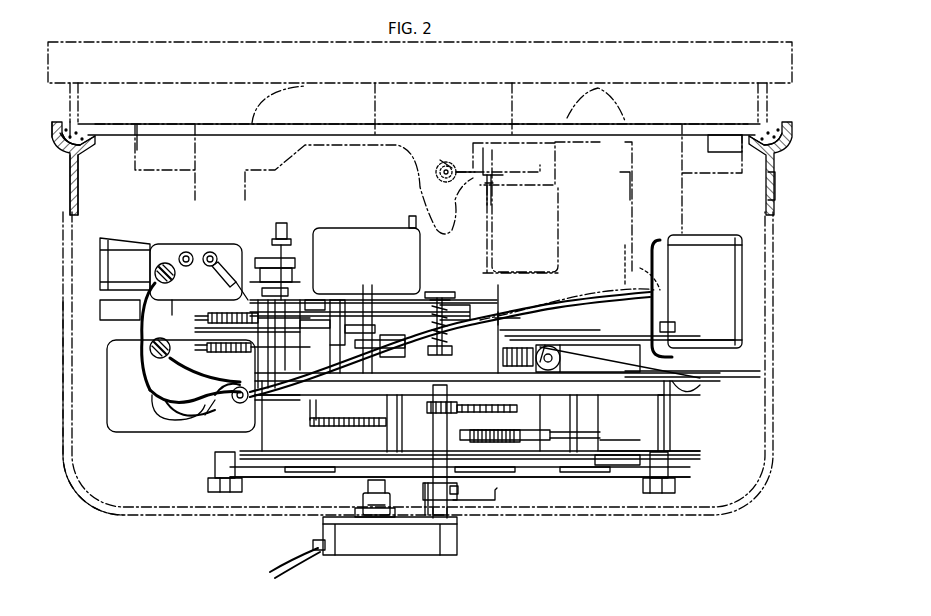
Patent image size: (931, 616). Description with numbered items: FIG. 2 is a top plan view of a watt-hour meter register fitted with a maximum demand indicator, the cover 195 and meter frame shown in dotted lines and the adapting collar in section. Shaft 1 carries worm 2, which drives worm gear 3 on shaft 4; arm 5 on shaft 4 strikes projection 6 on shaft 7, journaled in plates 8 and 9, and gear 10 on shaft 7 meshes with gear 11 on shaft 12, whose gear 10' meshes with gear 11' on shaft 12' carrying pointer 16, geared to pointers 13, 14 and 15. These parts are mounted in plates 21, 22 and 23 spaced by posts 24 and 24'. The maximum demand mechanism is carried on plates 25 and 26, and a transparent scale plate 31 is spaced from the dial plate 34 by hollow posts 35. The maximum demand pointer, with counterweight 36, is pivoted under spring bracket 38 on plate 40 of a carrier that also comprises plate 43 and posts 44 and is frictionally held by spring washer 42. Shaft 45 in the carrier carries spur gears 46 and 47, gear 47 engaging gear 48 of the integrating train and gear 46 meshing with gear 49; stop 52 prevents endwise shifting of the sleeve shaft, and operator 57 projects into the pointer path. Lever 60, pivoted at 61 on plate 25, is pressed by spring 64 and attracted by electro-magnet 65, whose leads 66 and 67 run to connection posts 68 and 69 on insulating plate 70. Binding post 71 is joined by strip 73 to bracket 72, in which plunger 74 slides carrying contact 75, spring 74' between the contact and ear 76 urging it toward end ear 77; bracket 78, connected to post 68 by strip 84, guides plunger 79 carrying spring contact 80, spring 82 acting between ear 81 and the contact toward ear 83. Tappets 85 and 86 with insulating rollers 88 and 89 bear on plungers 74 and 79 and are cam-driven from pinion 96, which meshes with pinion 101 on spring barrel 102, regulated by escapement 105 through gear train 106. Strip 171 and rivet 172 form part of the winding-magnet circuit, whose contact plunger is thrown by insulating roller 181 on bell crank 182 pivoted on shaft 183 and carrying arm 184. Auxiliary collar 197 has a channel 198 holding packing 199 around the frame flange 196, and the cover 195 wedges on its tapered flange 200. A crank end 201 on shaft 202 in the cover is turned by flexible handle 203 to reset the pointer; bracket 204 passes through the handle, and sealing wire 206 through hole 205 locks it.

The shaft 1 is at (436, 172).
The worm 2 is at (449, 165).
The worm gear 3 is at (500, 175).
The shaft 4 is at (487, 186).
The radially extending arm 5 is at (505, 315).
The projection 6 is at (525, 318).
The shaft 7 is at (545, 318).
The plate 8 is at (570, 350).
The plate 9 is at (590, 392).
The gear 10 is at (526, 329).
The gear 10' is at (610, 264).
The gear 11 is at (584, 339).
The gear 11' is at (621, 418).
The rotatable shaft 12 is at (567, 293).
The rotatable shaft 12' is at (617, 461).
The pointer 13 is at (300, 472).
The pointer 14 is at (412, 472).
The pointer 15 is at (500, 470).
The pointer 16 is at (598, 472).
The plate 21 is at (670, 454).
The plate 22 is at (672, 400).
The plate 23 is at (628, 340).
The posts 24 is at (677, 423).
The posts 24' is at (690, 395).
The plate 25 is at (762, 373).
The plate 26 is at (430, 292).
The transparent plate 31 is at (637, 480).
The watt-meter dial plate 34 is at (262, 458).
The hollow posts 35 is at (215, 470).
The counterbalancing weight 36 is at (445, 500).
The bracket 38 is at (458, 492).
The plate 40 is at (380, 458).
The spring washer 42 is at (360, 314).
The plate 43 is at (348, 412).
The posts 44 is at (387, 430).
The shaft 45 is at (492, 430).
The spur gear 46 is at (518, 409).
The spur gear 47 is at (522, 436).
The spur gear 48 is at (540, 455).
The gear 49 is at (427, 408).
The stop 52 is at (438, 298).
The projection 57 is at (425, 495).
The lever 60 is at (640, 352).
The pivot 61 is at (562, 360).
The spring 64 is at (518, 361).
The electro-magnet 65 is at (744, 272).
The lead 66 is at (640, 275).
The lead 67 is at (665, 308).
The connection post 68 is at (142, 338).
The connection post 69 is at (155, 410).
The plate of insulating material 70 is at (148, 432).
The binding post 71 is at (165, 263).
The metal bracket 72 is at (232, 276).
The conducting strip 73 is at (186, 252).
The metal plunger 74 is at (215, 317).
The spring 74' is at (226, 256).
The contact 75 is at (270, 320).
The ear 76 is at (196, 320).
The end ear 77 is at (310, 300).
The metal bracket 78 is at (206, 418).
The metal plunger 79 is at (176, 352).
The spring contact 80 is at (215, 332).
The ear 81 is at (195, 412).
The spring 82 is at (245, 353).
The ear 83 is at (226, 398).
The conducting strip 84 is at (150, 395).
The tappet 85 is at (312, 320).
The tappet 86 is at (298, 312).
The insulating roller 88 is at (350, 325).
The insulating roller 89 is at (277, 405).
The pinion 96 is at (240, 404).
The pinion 101 is at (312, 372).
The spring barrel 102 is at (390, 335).
The escapement 105 is at (378, 230).
The train of gears 106 is at (365, 340).
The connecting strip 171 is at (180, 248).
The securing rivet 172 is at (210, 252).
The insulating roller 181 is at (281, 223).
The bell crank 182 is at (338, 300).
The shaft 183 is at (262, 290).
The arm 184 is at (290, 258).
The meter cover 195 is at (65, 470).
The tapered flange 196 is at (74, 130).
The auxiliary collar 197 is at (145, 198).
The channel 198 is at (68, 155).
The packing material 199 is at (86, 139).
The tapered flange 200 is at (80, 195).
The crank arm end 201 is at (500, 496).
The shaft 202 is at (446, 512).
The handle 203 is at (395, 556).
The bracket 204 is at (355, 512).
The hole 205 is at (325, 545).
The sealing wire 206 is at (292, 572).